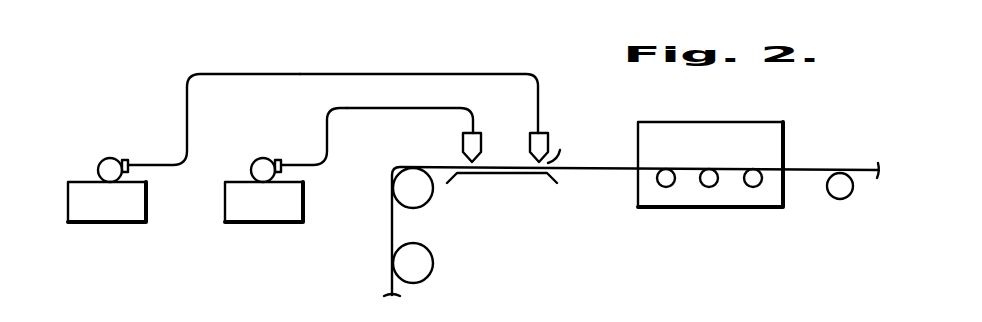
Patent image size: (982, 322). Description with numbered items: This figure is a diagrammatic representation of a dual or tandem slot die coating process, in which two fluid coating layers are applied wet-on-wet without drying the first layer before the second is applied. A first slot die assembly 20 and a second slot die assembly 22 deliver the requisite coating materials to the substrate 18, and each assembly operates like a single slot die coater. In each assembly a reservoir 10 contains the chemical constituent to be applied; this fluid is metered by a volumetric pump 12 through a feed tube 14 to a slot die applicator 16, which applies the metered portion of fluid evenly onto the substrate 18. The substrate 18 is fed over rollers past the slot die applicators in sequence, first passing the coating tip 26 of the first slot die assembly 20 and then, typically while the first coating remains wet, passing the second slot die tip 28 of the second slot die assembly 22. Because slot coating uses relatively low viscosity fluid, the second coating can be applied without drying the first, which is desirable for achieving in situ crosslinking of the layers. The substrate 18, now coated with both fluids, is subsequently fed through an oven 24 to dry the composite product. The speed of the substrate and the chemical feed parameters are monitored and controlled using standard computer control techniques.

The reservoir 10 is at (146, 222).
The volumetric pump 12 is at (106, 157).
The feed tube 14 is at (225, 70).
The slot die applicator 16 is at (532, 135).
The substrate 18 is at (392, 211).
The first slot die assembly 20 is at (387, 110).
The second slot die assembly 22 is at (334, 73).
The oven 24 is at (681, 158).
The coating tip 26 is at (462, 160).
The second slot die tip 28 is at (569, 148).